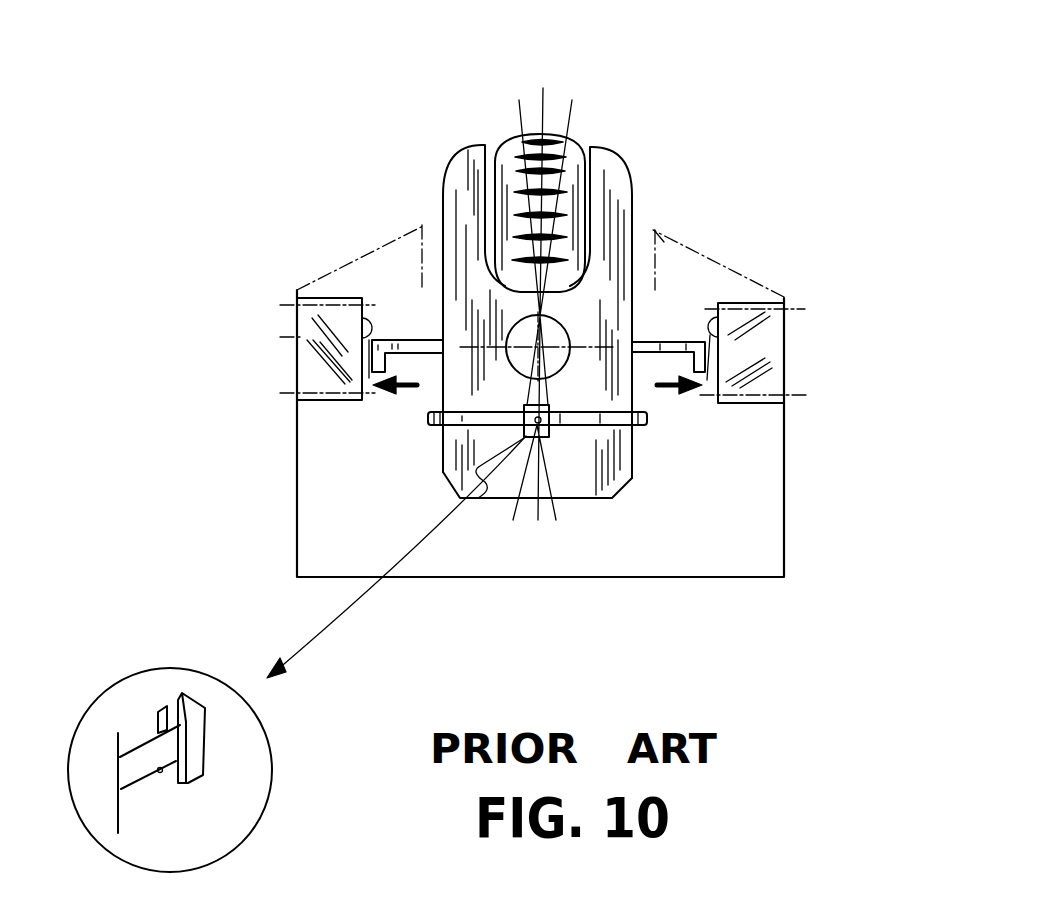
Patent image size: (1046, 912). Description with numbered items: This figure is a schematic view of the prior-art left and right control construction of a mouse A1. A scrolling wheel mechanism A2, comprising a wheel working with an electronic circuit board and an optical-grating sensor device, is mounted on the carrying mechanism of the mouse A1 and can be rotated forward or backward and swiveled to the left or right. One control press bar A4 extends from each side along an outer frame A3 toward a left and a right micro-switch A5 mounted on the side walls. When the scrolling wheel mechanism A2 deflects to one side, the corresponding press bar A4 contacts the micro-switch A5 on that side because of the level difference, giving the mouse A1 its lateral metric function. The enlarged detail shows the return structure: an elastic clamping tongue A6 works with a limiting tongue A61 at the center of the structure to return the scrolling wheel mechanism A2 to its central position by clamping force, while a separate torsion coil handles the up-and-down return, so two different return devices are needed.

The mouse A1 is at (758, 510).
The scrolling wheel mechanism A2 is at (583, 146).
The outer frame A3 is at (634, 308).
The control press bar A4 is at (405, 338).
The micro-switch A5 is at (297, 338).
The elastic clamping tongue A6 is at (186, 695).
The limiting tongue A61 is at (147, 743).